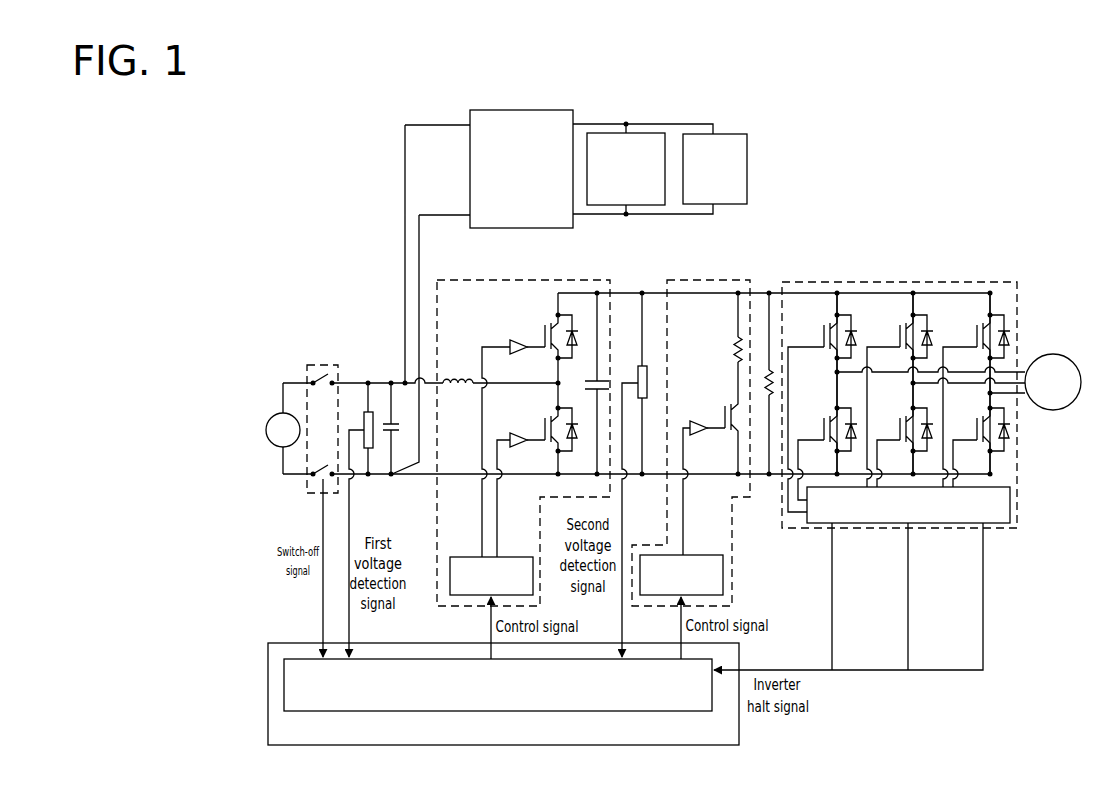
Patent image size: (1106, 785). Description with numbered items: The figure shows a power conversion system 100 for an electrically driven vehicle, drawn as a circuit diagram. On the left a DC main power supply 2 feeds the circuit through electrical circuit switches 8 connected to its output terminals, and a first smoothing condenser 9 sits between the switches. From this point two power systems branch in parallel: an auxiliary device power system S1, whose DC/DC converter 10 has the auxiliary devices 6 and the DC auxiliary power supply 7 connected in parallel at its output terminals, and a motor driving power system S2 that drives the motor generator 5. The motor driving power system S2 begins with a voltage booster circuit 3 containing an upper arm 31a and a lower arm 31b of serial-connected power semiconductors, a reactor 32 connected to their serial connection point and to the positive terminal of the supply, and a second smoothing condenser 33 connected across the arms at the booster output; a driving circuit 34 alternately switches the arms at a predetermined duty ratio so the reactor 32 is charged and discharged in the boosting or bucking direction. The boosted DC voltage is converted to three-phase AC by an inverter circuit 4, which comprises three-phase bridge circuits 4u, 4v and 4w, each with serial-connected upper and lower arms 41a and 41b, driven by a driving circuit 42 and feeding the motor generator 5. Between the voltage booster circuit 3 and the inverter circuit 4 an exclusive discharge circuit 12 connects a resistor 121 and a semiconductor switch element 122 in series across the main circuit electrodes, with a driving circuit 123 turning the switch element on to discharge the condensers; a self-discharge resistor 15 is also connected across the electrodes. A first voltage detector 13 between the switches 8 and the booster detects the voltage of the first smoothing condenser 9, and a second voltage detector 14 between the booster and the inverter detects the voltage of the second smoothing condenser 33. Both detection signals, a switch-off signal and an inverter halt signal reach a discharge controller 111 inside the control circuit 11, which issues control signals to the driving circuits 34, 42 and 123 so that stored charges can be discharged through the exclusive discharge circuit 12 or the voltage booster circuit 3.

The power conversion system 100 is at (833, 127).
The auxiliary device power system S1 is at (430, 98).
The motor driving power system S2 is at (779, 231).
The DC main power supply 2 is at (271, 412).
The voltage booster circuit 3 is at (513, 280).
The inverter circuit 4 is at (930, 280).
The three-phase bridge circuit 4u is at (832, 302).
The three-phase bridge circuit 4v is at (908, 302).
The three-phase bridge circuit 4w is at (984, 302).
The motor generator 5 is at (1053, 354).
The auxiliary device 6 is at (733, 134).
The DC auxiliary power supply 7 is at (648, 133).
The electrical circuit switch 8 is at (323, 363).
The first smoothing condenser 9 is at (389, 422).
The DC/DC converter 10 is at (518, 110).
The control circuit 11 is at (531, 746).
The exclusive discharge circuit 12 is at (727, 280).
The first voltage detector 13 is at (374, 442).
The second voltage detector 14 is at (647, 388).
The self-discharge resistor 15 is at (765, 398).
The upper arm 31a is at (545, 340).
The lower arm 31b is at (545, 432).
The reactor 32 is at (455, 372).
The second smoothing condenser 33 is at (594, 386).
The driving circuit 34 is at (470, 557).
The upper arm 41a is at (976, 346).
The lower arm 41b is at (976, 432).
The driving circuit 42 is at (1002, 526).
The discharge controller 111 is at (431, 712).
The resistor 121 is at (732, 352).
The semiconductor switch element 122 is at (724, 419).
The driving circuit 123 is at (697, 553).